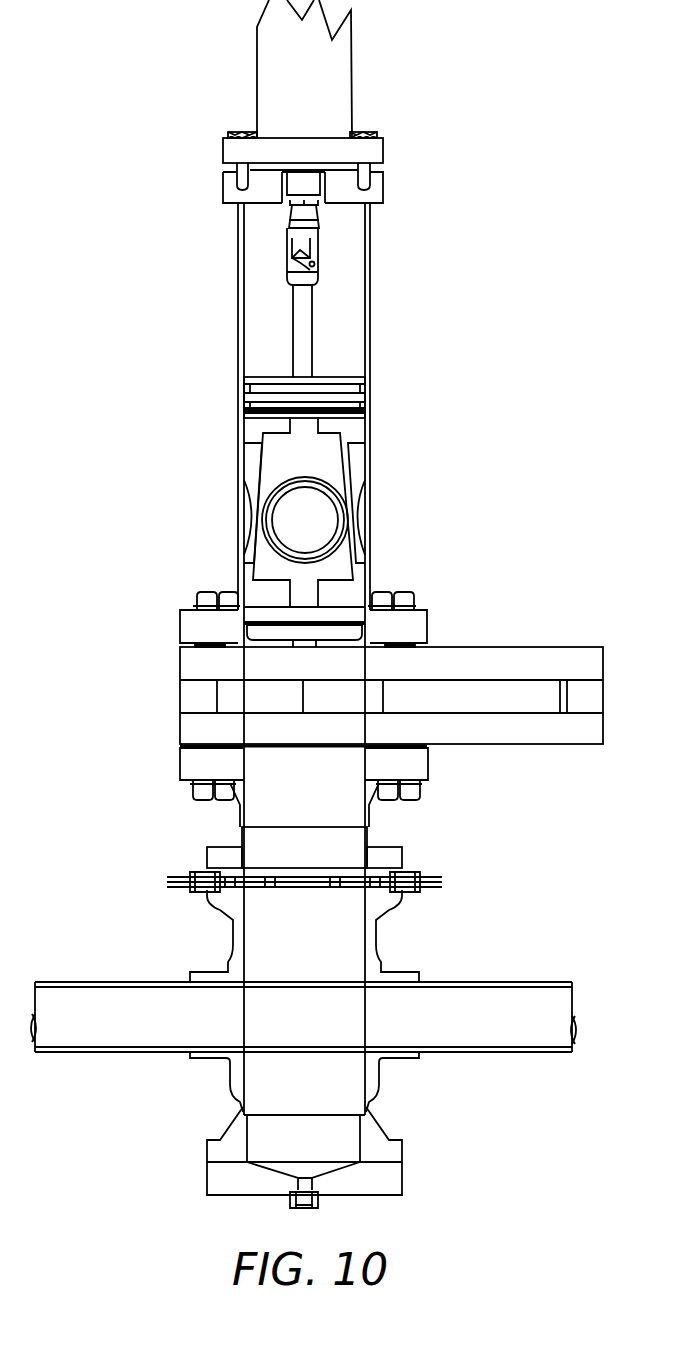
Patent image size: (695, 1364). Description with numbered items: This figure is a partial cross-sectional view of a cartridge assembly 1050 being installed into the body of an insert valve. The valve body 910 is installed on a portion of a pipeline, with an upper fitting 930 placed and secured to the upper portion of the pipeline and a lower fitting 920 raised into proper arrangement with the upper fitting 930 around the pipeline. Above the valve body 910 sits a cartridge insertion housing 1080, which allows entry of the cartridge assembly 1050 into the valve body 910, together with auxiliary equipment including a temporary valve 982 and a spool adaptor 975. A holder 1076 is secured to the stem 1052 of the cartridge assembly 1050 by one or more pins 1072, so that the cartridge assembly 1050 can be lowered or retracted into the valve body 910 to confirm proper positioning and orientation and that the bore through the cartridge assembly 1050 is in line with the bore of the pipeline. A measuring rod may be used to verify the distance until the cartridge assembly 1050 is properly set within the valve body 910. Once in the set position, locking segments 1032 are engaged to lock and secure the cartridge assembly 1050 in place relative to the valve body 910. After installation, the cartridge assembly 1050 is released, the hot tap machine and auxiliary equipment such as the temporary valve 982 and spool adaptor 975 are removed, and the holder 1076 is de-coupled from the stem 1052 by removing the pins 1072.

The valve body 910 is at (140, 968).
The lower fitting 920 is at (192, 1057).
The upper fitting 930 is at (195, 975).
The spool adaptor 975 is at (430, 762).
The temporary valve 982 is at (545, 650).
The locking segments 1032 is at (398, 870).
The cartridge assembly 1050 is at (325, 455).
The stem 1052 is at (307, 311).
The pins 1072 is at (312, 258).
The holder 1076 is at (308, 210).
The cartridge insertion housing 1080 is at (238, 273).